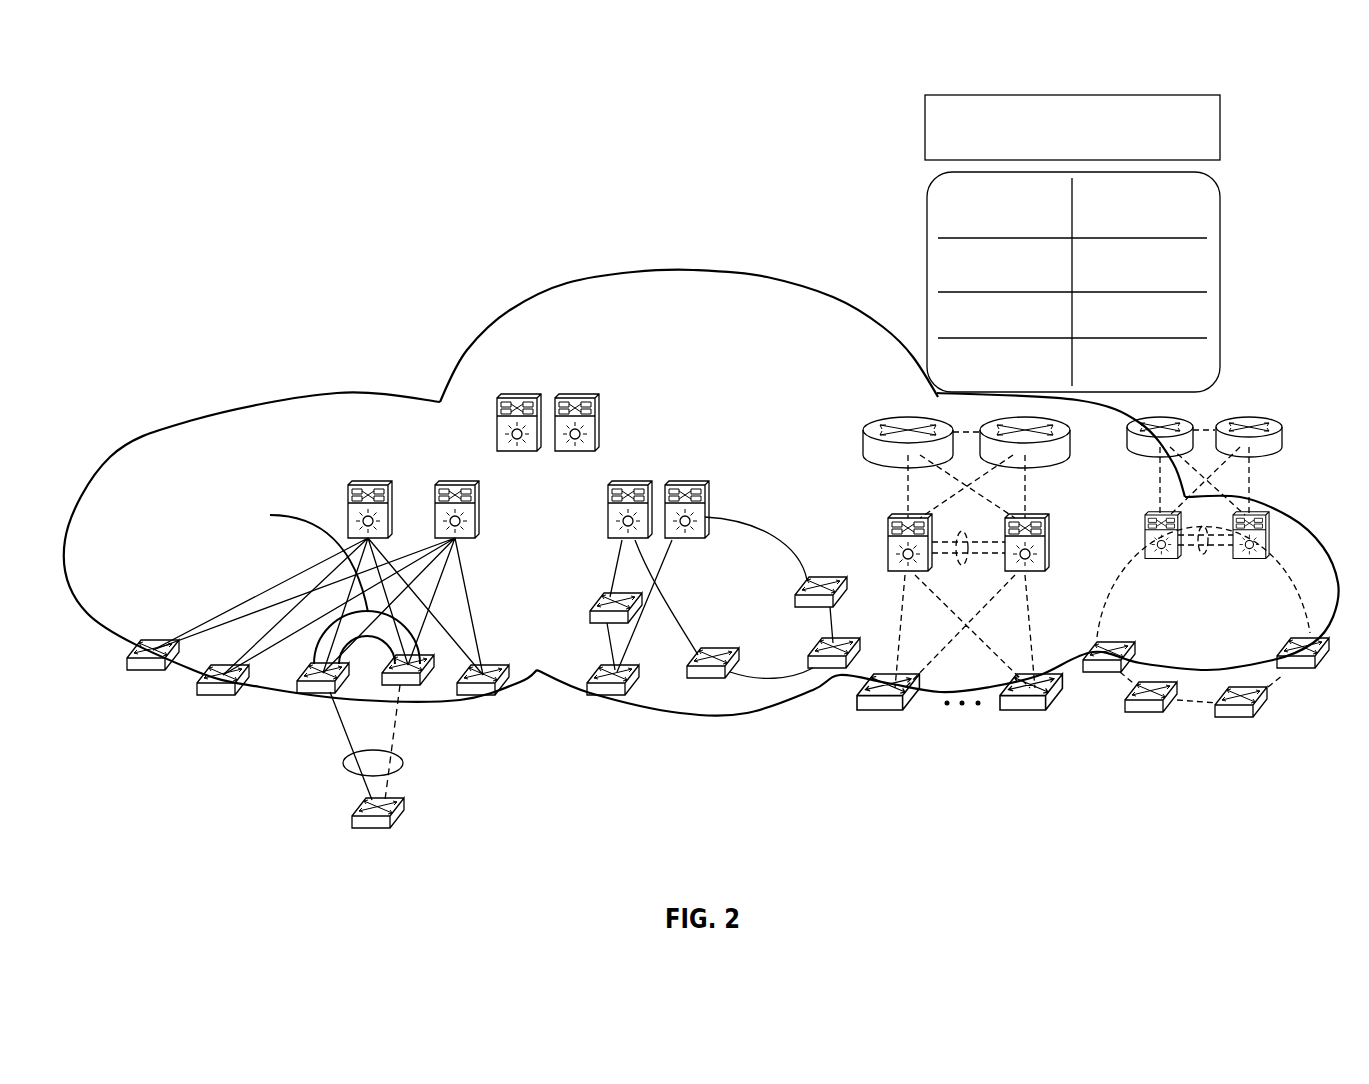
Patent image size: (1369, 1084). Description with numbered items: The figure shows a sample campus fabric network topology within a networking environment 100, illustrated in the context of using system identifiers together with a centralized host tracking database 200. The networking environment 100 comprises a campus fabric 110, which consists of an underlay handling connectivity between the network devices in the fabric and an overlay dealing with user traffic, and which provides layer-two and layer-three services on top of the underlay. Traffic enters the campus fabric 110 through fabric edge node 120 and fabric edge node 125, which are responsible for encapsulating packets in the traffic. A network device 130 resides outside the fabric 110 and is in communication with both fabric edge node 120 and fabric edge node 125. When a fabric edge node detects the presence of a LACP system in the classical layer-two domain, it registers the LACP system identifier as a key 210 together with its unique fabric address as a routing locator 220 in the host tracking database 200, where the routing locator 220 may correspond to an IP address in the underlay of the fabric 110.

The networking environment 100 is at (291, 169).
The campus fabric 110 is at (687, 270).
The fabric edge node 120 is at (290, 692).
The fabric edge node 125 is at (428, 683).
The network device 130 is at (350, 822).
The host tracking database 200 is at (902, 134).
The key 210 is at (935, 263).
The routing locator 220 is at (1208, 267).